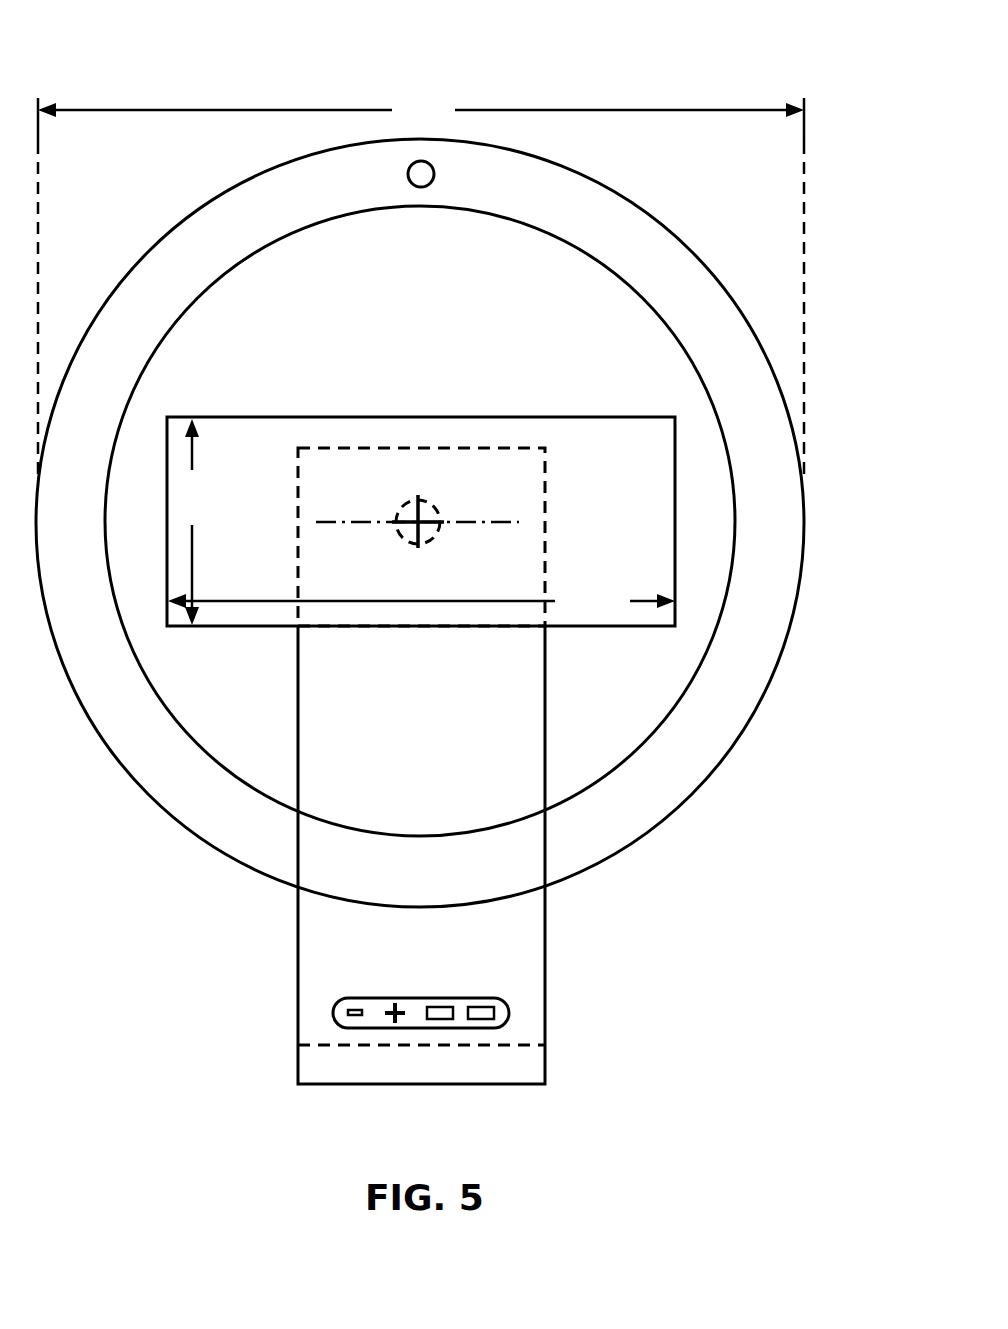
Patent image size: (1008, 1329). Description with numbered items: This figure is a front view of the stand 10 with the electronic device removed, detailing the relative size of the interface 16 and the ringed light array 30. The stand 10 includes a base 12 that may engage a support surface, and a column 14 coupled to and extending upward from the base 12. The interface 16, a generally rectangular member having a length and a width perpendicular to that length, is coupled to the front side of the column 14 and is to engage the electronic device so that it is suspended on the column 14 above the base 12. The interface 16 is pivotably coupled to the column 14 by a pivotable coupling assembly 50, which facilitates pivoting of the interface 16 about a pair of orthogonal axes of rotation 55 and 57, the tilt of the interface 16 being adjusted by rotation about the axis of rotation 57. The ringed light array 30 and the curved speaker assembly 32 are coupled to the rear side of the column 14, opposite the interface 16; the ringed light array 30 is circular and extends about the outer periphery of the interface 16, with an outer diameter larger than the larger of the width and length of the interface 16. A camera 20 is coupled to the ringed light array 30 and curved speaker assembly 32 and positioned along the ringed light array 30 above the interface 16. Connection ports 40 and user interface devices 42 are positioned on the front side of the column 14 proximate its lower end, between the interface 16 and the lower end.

The stand 10 is at (170, 62).
The base 12 is at (521, 1045).
The column 14 is at (545, 675).
The interface 16 is at (548, 418).
The camera 20 is at (435, 172).
The ringed light array 30 is at (805, 537).
The curved speaker assembly 32 is at (611, 264).
The connection ports 40 is at (488, 1018).
The user interface devices 42 is at (360, 1016).
The pivotable coupling assembly 50 is at (430, 507).
The axis of rotation 55 is at (407, 512).
The axis of rotation 57 is at (492, 524).